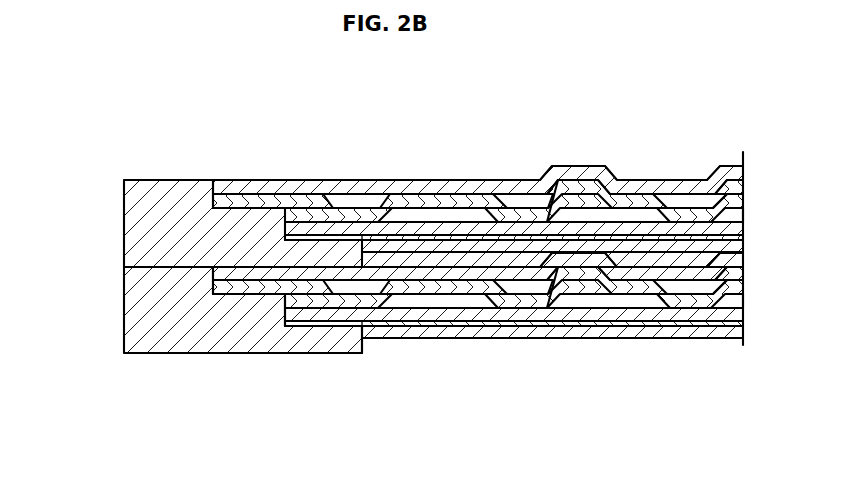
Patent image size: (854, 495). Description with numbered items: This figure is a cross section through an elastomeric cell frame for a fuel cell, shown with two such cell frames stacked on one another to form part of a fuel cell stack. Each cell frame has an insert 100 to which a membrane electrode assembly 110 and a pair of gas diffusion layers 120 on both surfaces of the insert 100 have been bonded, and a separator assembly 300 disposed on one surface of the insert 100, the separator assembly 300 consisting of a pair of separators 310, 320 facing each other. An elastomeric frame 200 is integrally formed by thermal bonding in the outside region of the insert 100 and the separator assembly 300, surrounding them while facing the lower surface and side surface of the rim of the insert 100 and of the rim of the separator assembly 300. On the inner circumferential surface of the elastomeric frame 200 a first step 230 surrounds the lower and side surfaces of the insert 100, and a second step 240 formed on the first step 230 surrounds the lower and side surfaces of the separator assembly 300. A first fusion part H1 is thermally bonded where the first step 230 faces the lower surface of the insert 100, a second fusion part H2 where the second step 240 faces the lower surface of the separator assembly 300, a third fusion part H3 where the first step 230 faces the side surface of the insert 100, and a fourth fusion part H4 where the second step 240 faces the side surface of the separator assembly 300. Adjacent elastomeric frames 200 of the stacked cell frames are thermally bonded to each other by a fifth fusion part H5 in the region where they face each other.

The insert 100 is at (705, 100).
The membrane electrode assembly 110 is at (618, 235).
The gas diffusion layers 120 is at (582, 228).
The elastomeric frame 200 is at (150, 209).
The first step 230 is at (358, 322).
The second step 240 is at (244, 207).
The separator assembly 300 is at (403, 100).
The separator 310 is at (418, 202).
The separator 320 is at (462, 187).
The first fusion part H1 is at (307, 327).
The second fusion part H2 is at (268, 208).
The third fusion part H3 is at (285, 313).
The fourth fusion part H4 is at (215, 195).
The fifth fusion part H5 is at (165, 267).